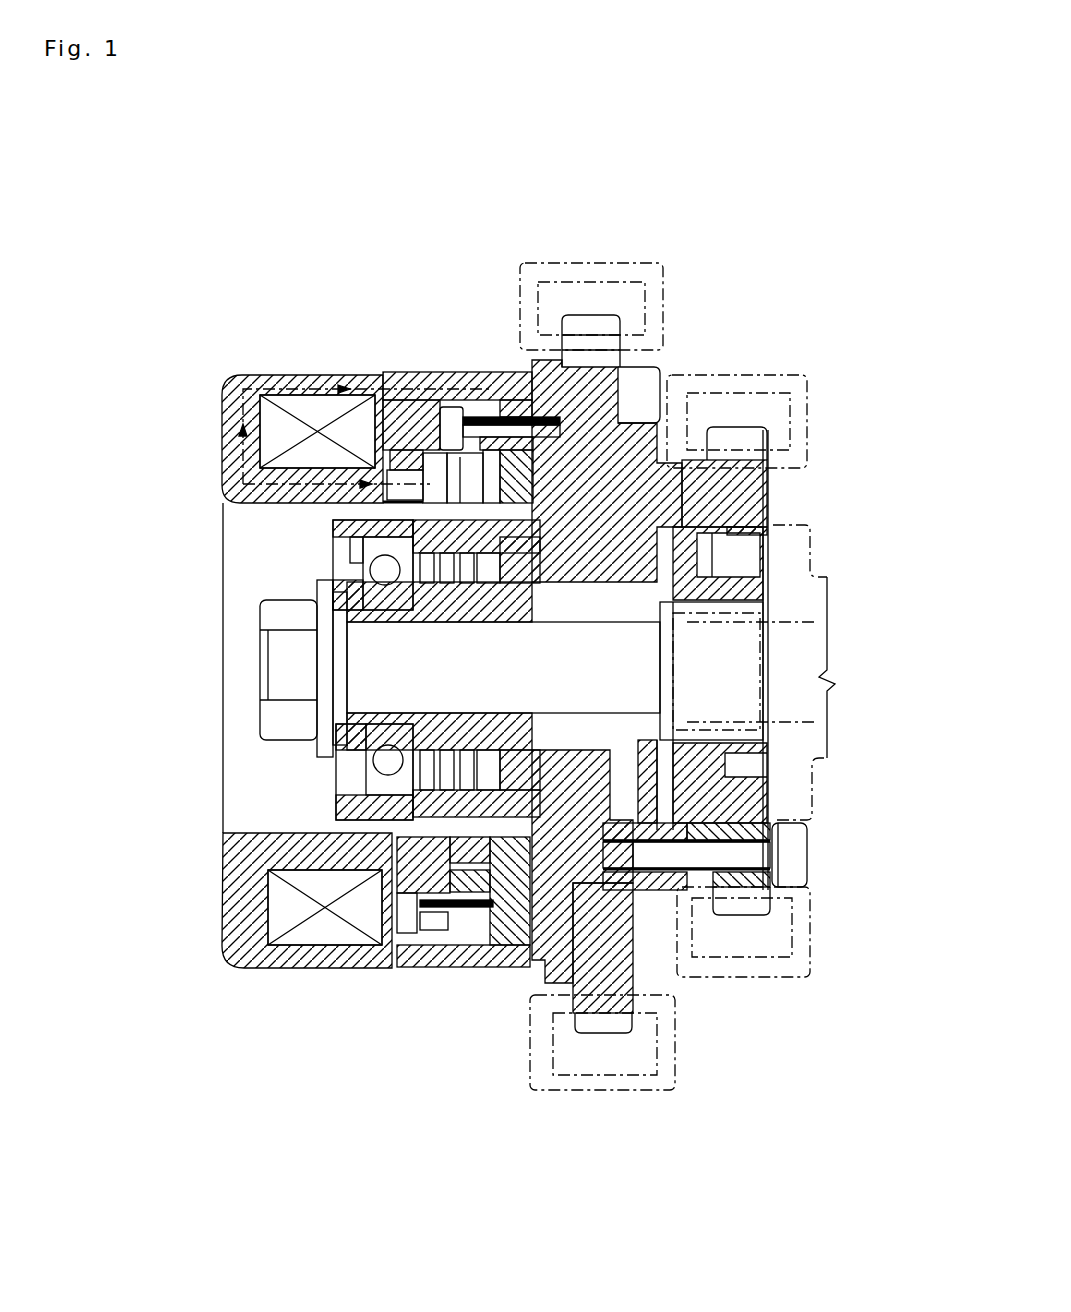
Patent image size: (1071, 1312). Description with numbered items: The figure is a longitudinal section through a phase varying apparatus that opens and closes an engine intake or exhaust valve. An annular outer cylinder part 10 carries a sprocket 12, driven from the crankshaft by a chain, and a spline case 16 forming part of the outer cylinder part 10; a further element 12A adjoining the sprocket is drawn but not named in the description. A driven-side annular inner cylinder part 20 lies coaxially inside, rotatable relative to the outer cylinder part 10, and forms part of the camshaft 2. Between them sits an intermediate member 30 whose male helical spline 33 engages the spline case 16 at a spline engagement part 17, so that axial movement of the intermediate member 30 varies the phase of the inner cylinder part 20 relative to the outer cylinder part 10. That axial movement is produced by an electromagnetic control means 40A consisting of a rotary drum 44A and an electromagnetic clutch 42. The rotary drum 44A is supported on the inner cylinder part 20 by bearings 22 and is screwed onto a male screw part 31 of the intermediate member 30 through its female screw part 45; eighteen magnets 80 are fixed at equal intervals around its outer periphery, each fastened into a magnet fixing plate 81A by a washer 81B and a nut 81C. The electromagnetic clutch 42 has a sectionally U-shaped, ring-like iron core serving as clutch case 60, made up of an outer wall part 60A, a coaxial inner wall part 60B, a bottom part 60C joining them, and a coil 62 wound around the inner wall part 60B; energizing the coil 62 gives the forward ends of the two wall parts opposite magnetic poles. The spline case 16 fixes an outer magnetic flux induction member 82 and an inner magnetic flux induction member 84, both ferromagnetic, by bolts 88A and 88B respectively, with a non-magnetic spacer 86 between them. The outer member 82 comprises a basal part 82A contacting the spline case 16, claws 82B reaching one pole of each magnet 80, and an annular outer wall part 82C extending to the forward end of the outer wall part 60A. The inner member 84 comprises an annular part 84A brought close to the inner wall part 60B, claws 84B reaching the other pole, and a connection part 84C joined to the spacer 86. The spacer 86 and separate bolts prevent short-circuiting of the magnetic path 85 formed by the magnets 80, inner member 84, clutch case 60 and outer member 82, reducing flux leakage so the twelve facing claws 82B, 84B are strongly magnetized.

The camshaft 2 is at (797, 622).
The annular outer cylinder part 10 is at (591, 257).
The sprocket 12 is at (614, 315).
The bolt 12A is at (733, 457).
The spline case 16 is at (540, 360).
The spline engagement part 17 is at (790, 497).
The male helical spline 33 is at (767, 507).
The annular inner cylinder part 20 is at (570, 735).
The bearings 22 is at (337, 570).
The intermediate member 30 is at (527, 757).
The male screw part 31 is at (451, 671).
The female screw part 45 is at (457, 563).
The electromagnetic control means 40A is at (743, 263).
The electromagnetic clutch 42 is at (300, 328).
The rotary drum 44A is at (333, 527).
The clutch case 60 is at (289, 389).
The outer wall part 60A is at (300, 374).
The inner wall part 60B is at (290, 502).
The bottom part 60C is at (222, 432).
The coil 62 is at (293, 908).
The magnets 80 is at (610, 463).
The magnet fixing plate 81A is at (682, 480).
The washer 81B is at (520, 565).
The nut 81C is at (552, 560).
The outer magnetic flux induction member 82 is at (594, 760).
The basal part 82A is at (575, 960).
The claws 82B is at (615, 940).
The annular outer wall part 82C is at (535, 985).
The inner magnetic flux induction member 84 is at (397, 400).
The annular part 84A is at (375, 835).
The claws 84B is at (243, 952).
The connection part 84C is at (420, 968).
The magnetic path 85 is at (345, 378).
The non-magnetic spacer 86 is at (433, 378).
The bolt 88A is at (470, 373).
The bolt 88B is at (457, 910).